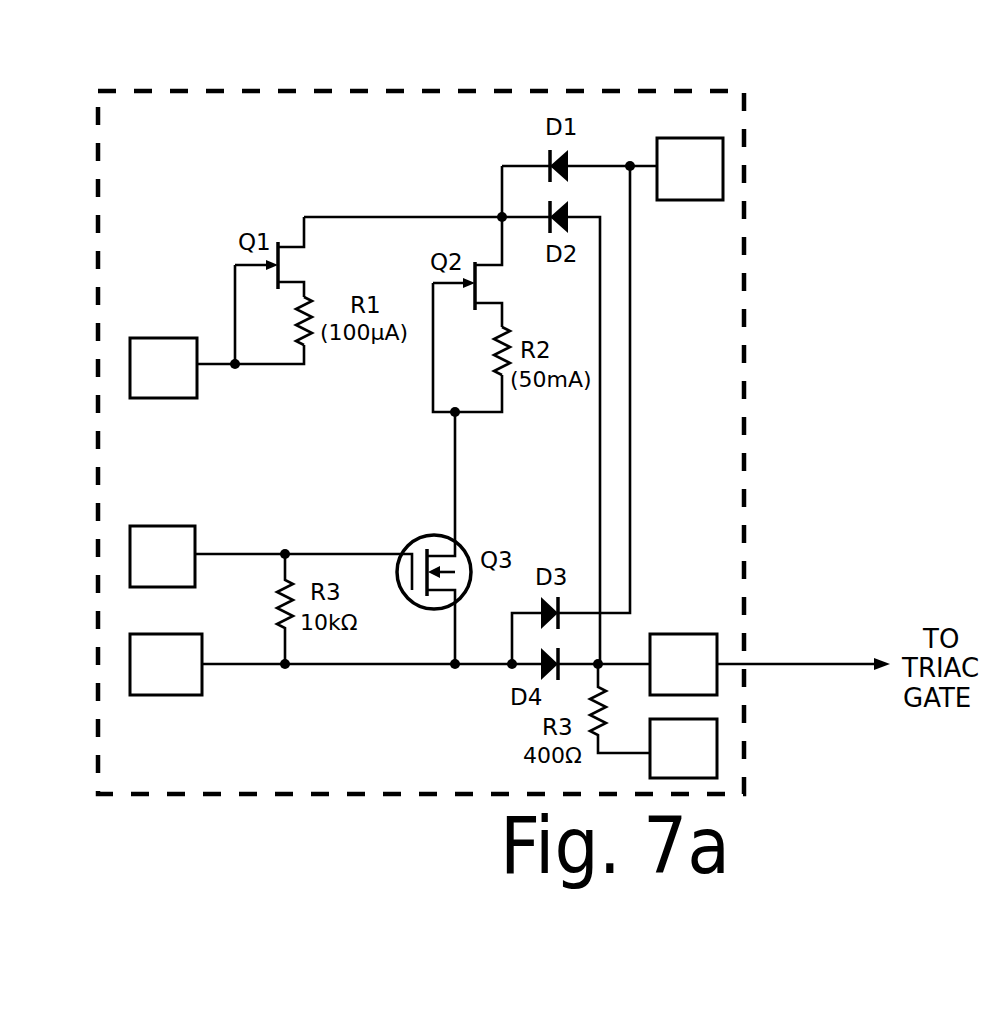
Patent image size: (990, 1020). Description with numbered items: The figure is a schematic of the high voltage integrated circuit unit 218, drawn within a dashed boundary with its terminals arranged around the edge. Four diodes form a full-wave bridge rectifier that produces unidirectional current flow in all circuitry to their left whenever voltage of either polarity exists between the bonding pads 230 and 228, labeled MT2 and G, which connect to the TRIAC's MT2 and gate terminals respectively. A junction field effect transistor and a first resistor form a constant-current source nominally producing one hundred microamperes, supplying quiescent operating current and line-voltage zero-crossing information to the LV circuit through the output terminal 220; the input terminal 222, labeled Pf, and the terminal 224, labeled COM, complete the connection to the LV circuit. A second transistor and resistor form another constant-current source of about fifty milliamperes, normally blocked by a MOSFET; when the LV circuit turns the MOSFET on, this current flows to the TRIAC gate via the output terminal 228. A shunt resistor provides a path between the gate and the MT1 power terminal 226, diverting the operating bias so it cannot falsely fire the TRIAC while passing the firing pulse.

The high voltage integrated circuit unit 218 is at (197, 90).
The output terminal 220 is at (130, 360).
The input terminal 222 is at (130, 580).
The terminal 224 is at (130, 688).
The power terminal 226 is at (717, 748).
The output terminal 228 is at (717, 652).
The power terminal 230 is at (723, 157).